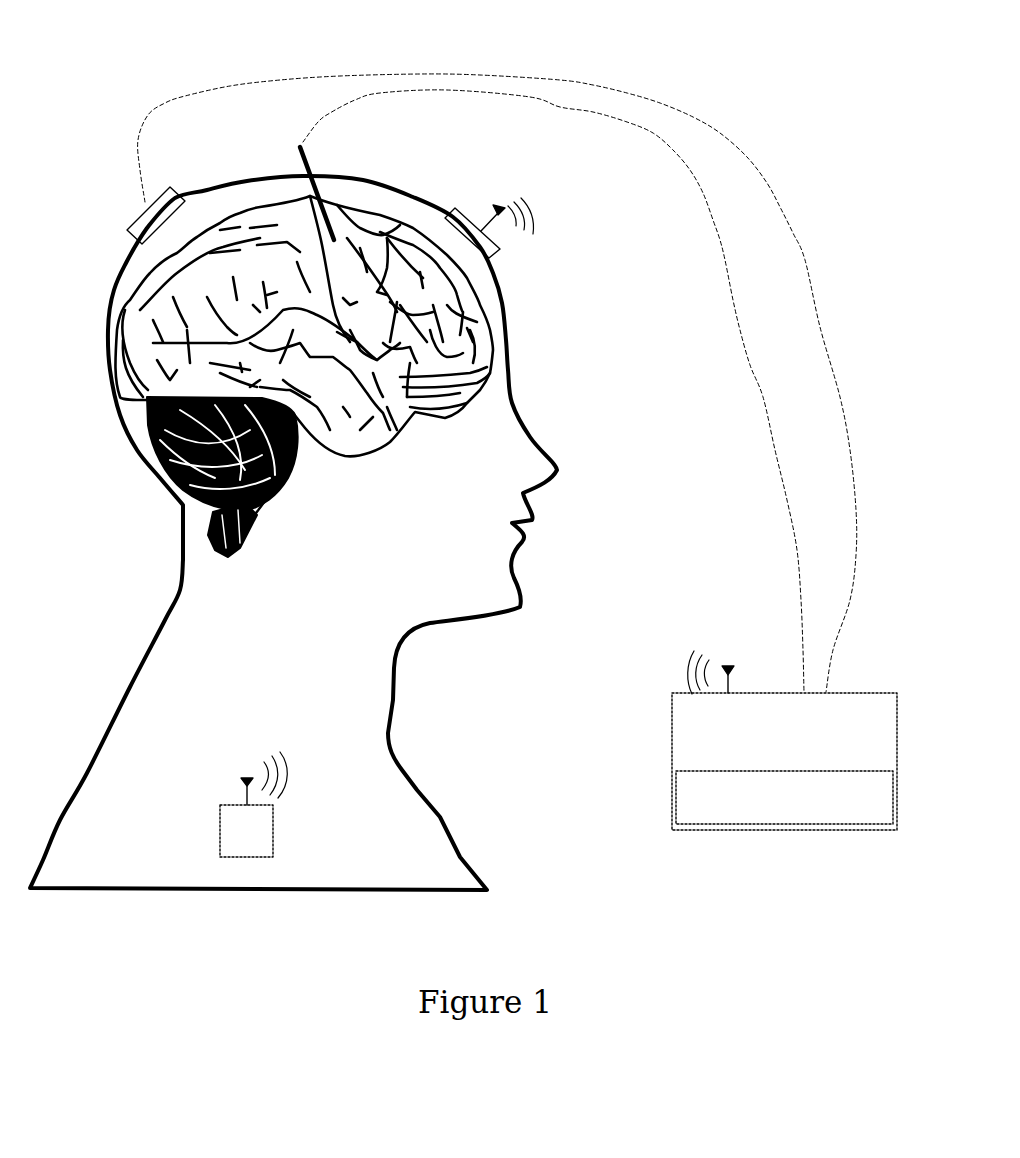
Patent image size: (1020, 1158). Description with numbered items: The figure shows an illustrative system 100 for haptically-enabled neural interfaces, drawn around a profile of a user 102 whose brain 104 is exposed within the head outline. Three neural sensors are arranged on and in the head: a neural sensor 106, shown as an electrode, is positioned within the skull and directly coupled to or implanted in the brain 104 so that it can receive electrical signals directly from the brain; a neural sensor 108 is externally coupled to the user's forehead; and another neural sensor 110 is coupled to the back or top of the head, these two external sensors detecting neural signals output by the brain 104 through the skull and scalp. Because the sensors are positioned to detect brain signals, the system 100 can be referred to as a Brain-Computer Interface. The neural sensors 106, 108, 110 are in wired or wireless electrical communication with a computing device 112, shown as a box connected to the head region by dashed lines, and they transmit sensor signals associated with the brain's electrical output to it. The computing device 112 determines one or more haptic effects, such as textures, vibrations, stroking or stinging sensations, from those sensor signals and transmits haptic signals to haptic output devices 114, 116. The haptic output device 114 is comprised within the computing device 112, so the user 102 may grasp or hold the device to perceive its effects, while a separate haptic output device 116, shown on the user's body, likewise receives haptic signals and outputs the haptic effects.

The system 100 is at (148, 66).
The user 102 is at (517, 608).
The brain 104 is at (146, 458).
The neural sensor 106 is at (298, 150).
The neural sensor 108 is at (501, 251).
The neural sensor 110 is at (125, 229).
The computing device 112 is at (784, 740).
The haptic output device 114 is at (784, 797).
The haptic output device 116 is at (248, 832).